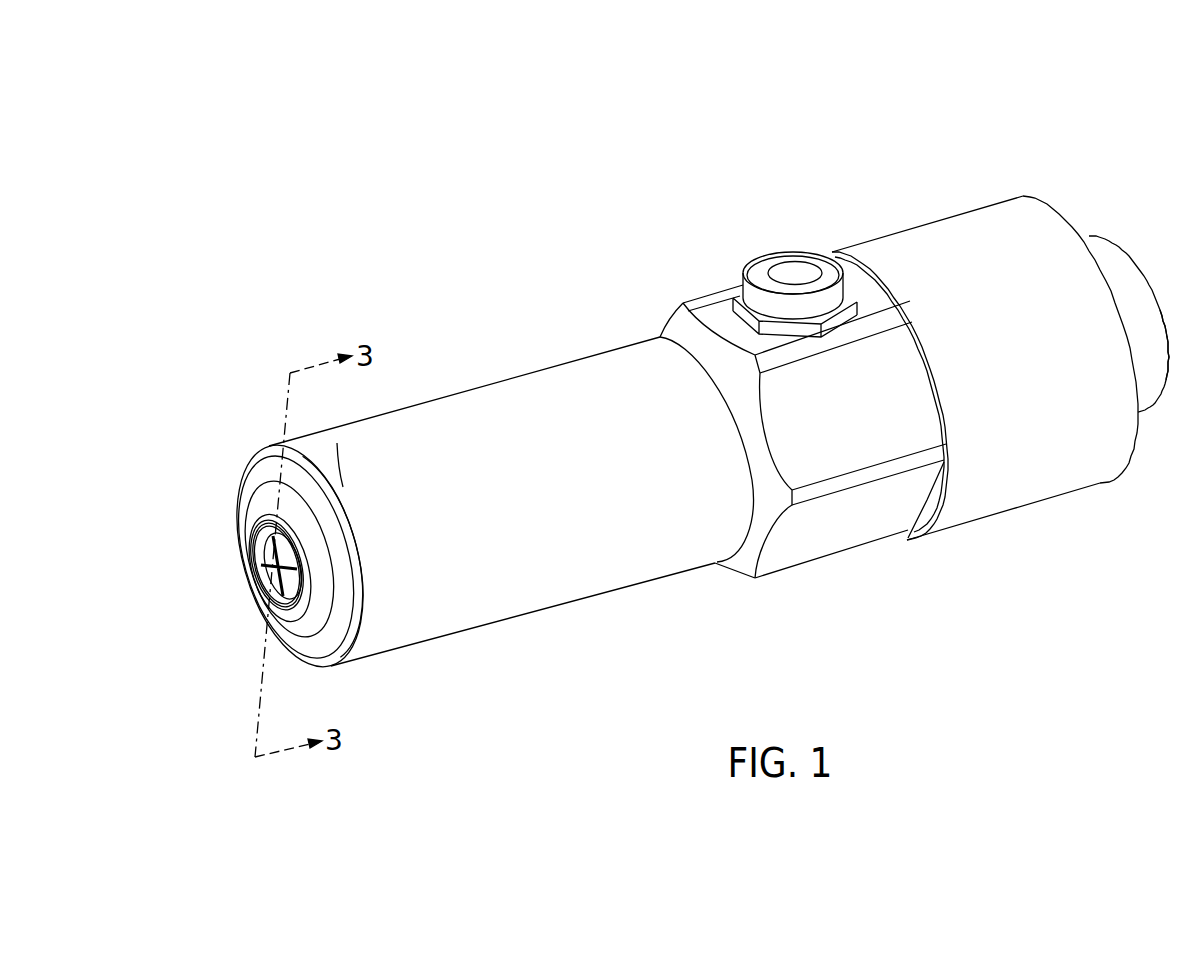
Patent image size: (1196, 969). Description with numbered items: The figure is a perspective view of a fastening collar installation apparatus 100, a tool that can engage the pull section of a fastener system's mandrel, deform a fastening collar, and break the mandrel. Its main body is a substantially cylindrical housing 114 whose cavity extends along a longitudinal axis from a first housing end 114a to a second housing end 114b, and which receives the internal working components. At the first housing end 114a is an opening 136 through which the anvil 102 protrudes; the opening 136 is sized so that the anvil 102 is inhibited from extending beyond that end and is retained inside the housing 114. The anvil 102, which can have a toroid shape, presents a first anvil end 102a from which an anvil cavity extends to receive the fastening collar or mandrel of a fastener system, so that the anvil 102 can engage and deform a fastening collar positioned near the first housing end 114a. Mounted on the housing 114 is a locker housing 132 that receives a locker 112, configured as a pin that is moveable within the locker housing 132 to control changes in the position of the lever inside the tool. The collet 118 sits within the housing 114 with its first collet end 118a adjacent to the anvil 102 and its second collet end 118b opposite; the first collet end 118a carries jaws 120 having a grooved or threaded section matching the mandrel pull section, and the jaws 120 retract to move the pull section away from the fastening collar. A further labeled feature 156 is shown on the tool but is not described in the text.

The fastening collar installation apparatus 100 is at (1010, 117).
The anvil 102 is at (240, 500).
The first anvil end 102a is at (237, 527).
The locker 112 is at (806, 272).
The housing 114 is at (578, 378).
The first housing end 114a is at (337, 640).
The second housing end 114b is at (1066, 218).
The collet 118 is at (1122, 256).
The first collet end 118a is at (262, 548).
The second collet end 118b is at (1160, 298).
The jaws 120 is at (276, 566).
The locker housing 132 is at (758, 277).
The opening 136 is at (277, 472).
The groove 156 is at (340, 488).